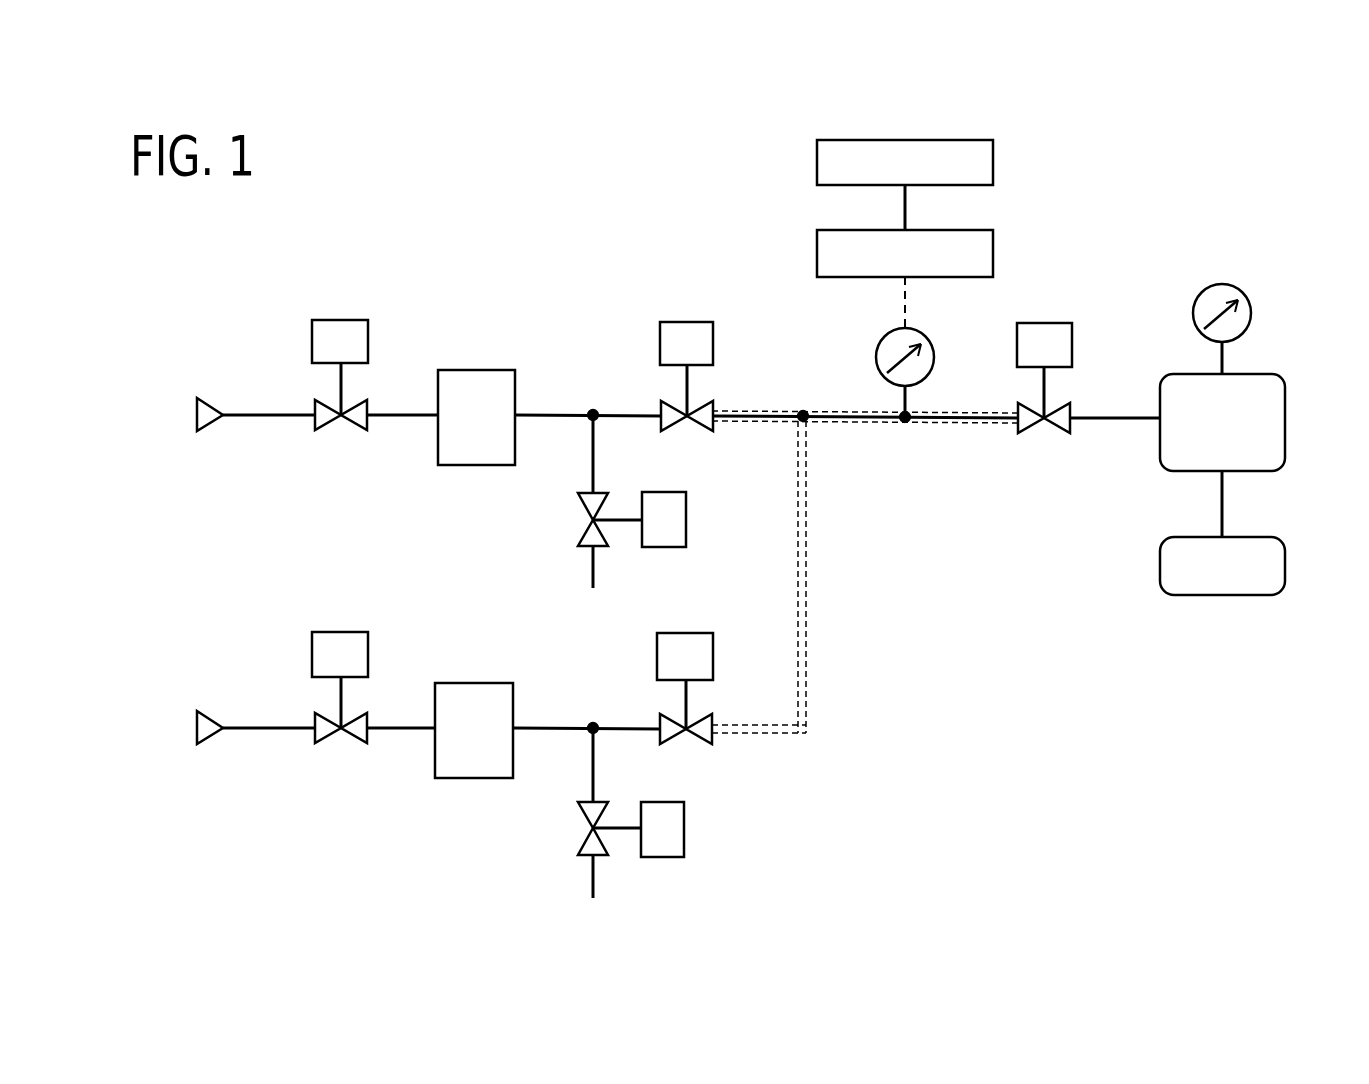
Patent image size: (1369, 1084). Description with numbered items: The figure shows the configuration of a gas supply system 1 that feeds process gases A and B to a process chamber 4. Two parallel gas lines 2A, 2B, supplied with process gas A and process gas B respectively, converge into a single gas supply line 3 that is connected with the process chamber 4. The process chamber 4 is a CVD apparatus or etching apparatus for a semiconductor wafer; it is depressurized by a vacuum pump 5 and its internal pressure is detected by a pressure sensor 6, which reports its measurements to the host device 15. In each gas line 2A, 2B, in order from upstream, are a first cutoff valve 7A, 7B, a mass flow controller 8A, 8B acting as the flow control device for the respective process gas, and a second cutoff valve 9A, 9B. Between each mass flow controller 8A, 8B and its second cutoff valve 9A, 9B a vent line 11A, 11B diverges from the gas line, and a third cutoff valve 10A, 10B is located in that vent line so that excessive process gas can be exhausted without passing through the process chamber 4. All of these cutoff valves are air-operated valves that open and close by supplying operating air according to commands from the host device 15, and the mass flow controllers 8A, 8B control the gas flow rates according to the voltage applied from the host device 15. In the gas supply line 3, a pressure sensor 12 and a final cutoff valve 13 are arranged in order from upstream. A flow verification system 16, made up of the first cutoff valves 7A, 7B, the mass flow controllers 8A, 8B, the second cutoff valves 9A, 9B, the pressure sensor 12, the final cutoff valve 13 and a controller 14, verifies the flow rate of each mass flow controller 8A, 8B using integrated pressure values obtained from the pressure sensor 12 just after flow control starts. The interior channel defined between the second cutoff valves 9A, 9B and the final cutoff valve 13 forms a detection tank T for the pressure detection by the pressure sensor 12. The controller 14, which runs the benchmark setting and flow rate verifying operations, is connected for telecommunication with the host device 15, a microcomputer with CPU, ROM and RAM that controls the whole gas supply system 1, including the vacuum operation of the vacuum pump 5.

The gas supply system 1 is at (1166, 210).
The gas line 2A is at (259, 414).
The gas line 2B is at (259, 727).
The gas supply line 3 is at (1117, 418).
The process chamber 4 is at (1302, 398).
The vacuum pump 5 is at (1302, 570).
The pressure sensor 6 is at (1251, 313).
The first cutoff valve 7A is at (337, 320).
The first cutoff valve 7B is at (337, 632).
The mass flow controller 8A is at (470, 370).
The mass flow controller 8B is at (470, 683).
The second cutoff valve 9A is at (690, 322).
The second cutoff valve 9B is at (688, 633).
The third cutoff valve 10A is at (686, 524).
The third cutoff valve 10B is at (684, 833).
The vent line 11A is at (592, 559).
The vent line 11B is at (592, 868).
The pressure sensor 12 is at (877, 354).
The final cutoff valve 13 is at (1040, 323).
The controller 14 is at (817, 255).
The host device 15 is at (817, 160).
The flow verification system 16 is at (711, 498).
The detection tank T is at (842, 423).